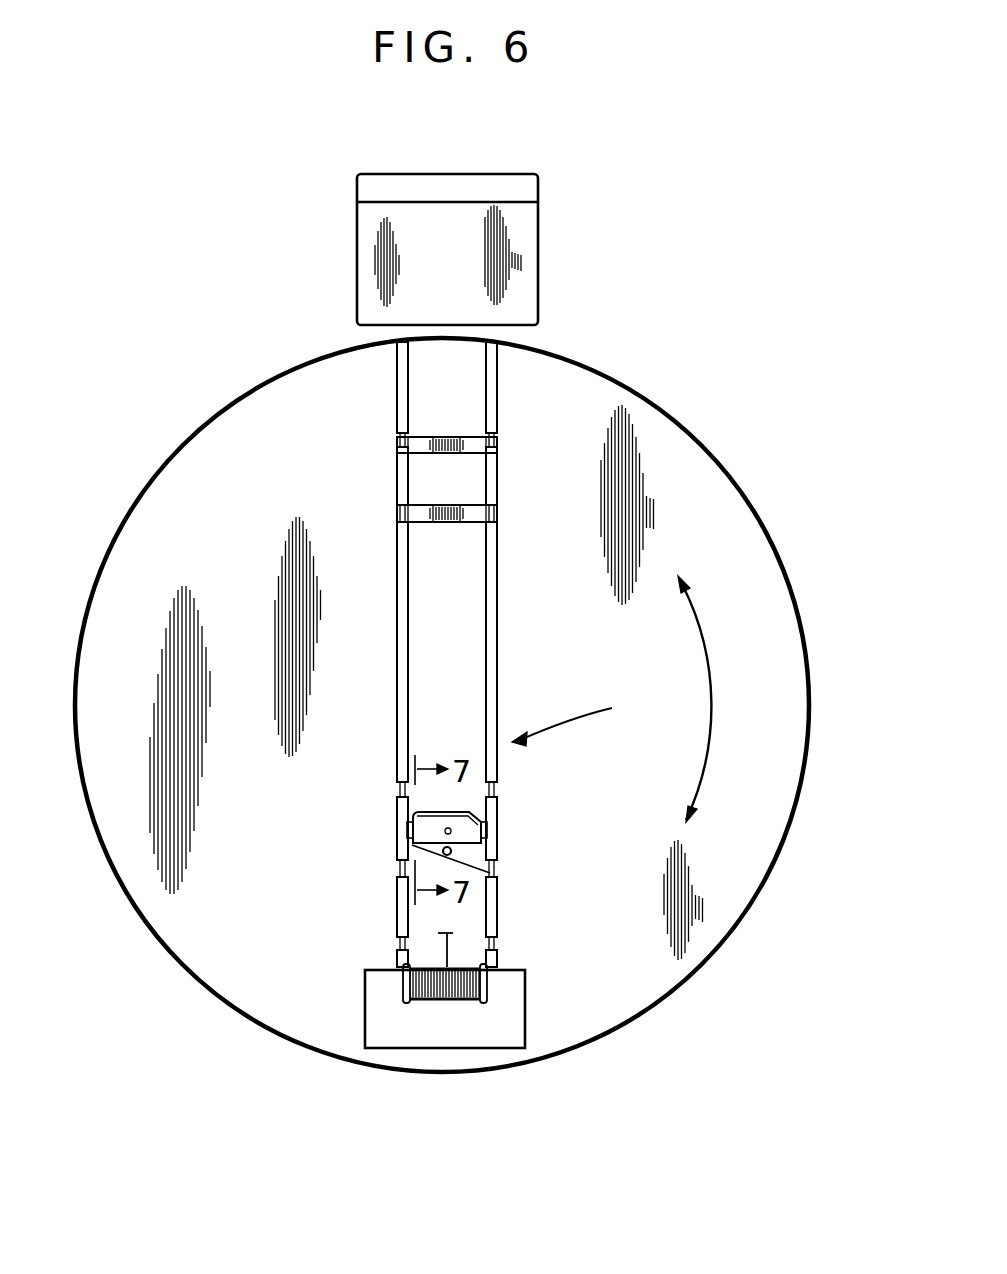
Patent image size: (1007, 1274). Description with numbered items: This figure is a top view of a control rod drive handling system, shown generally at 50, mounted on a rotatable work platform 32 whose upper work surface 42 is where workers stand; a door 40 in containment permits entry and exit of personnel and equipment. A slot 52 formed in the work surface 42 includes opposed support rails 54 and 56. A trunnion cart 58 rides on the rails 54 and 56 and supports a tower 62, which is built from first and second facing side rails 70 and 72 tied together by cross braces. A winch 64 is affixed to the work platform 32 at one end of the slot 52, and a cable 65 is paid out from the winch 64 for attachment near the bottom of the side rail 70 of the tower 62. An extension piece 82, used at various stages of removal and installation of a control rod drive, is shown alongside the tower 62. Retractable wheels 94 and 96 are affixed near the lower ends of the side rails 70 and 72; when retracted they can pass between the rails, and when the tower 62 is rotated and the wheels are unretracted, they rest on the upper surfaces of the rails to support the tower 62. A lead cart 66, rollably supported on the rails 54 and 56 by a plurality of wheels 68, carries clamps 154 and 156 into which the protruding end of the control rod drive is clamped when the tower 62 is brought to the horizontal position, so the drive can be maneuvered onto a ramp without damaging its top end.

The work platform 32 is at (752, 505).
The door 40 is at (523, 188).
The work surface 42 is at (748, 597).
The handling system 50 is at (578, 710).
The slot 52 is at (424, 654).
The support rail 54 is at (404, 714).
The support rail 56 is at (492, 668).
The trunnion cart 58 is at (492, 826).
The tower 62 is at (410, 817).
The winch 64 is at (483, 1003).
The cable 65 is at (452, 943).
The lead cart 66 is at (460, 482).
The wheels 68 is at (400, 440).
The side rail 70 is at (412, 846).
The side rail 72 is at (485, 840).
The extension piece 82 is at (452, 853).
The retractable wheel 94 is at (400, 943).
The retractable wheel 96 is at (495, 950).
The clamp 154 is at (455, 521).
The clamp 156 is at (452, 440).